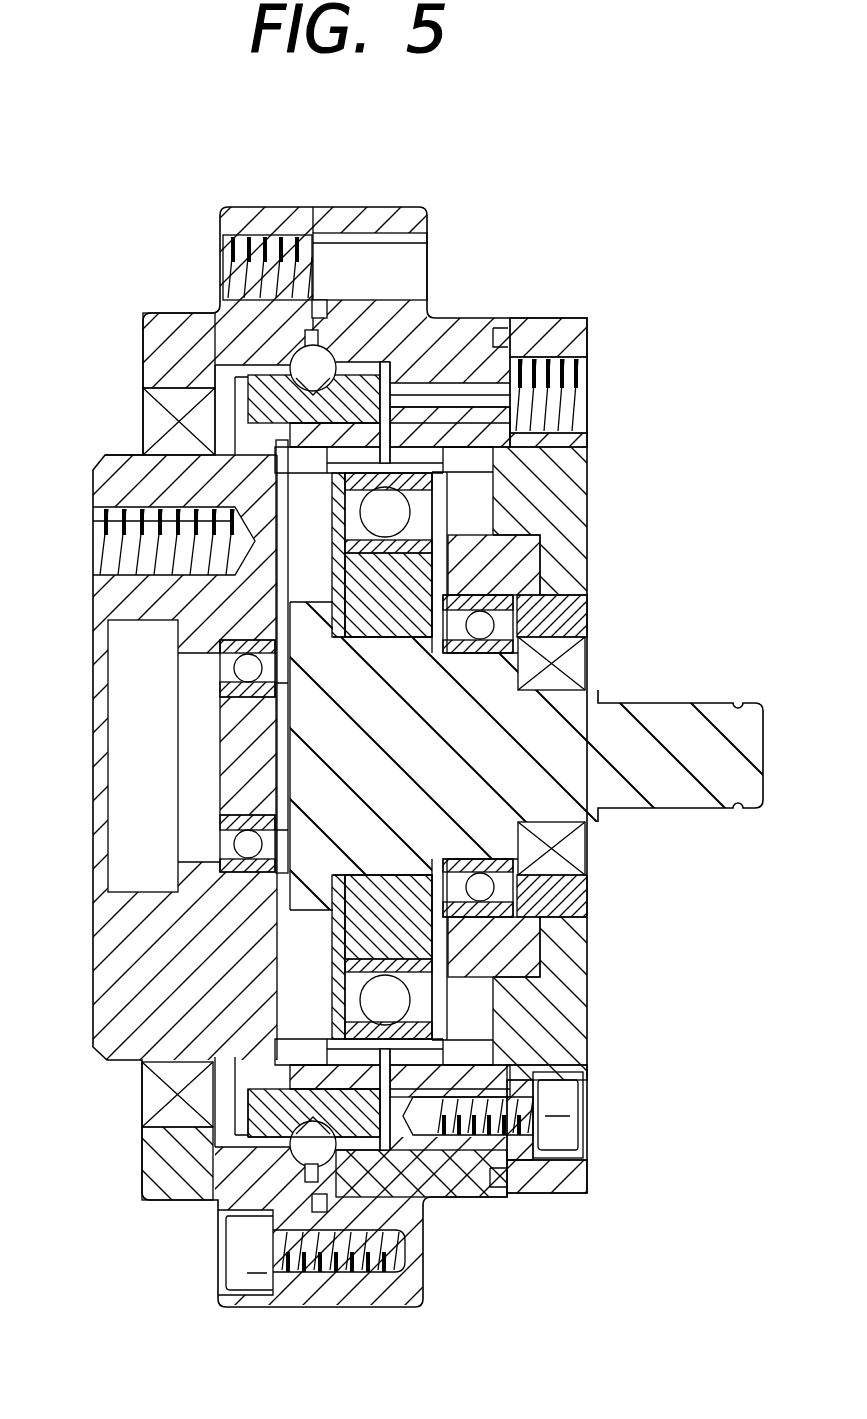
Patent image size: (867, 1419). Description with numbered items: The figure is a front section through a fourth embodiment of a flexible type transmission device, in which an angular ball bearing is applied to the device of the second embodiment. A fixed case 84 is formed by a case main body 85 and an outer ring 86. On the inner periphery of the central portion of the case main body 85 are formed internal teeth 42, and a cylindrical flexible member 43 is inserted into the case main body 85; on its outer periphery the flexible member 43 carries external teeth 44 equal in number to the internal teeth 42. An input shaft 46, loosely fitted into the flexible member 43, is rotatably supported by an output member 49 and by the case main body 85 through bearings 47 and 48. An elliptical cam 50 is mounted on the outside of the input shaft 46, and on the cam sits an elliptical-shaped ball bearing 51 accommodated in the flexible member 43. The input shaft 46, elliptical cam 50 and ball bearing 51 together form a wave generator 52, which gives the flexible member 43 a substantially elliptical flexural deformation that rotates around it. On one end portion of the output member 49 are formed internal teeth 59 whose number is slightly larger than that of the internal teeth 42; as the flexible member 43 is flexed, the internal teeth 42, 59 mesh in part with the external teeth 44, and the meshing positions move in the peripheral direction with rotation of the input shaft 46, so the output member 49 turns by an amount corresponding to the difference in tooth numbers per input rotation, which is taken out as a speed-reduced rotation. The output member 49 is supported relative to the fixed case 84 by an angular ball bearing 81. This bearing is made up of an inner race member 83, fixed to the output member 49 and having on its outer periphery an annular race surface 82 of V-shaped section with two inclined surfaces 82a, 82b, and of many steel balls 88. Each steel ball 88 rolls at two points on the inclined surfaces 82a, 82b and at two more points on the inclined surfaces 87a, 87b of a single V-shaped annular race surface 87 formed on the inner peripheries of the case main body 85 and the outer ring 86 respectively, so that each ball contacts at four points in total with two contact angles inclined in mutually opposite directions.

The internal teeth 42 is at (560, 492).
The flexible member 43 is at (560, 463).
The external teeth 44 is at (560, 407).
The input shaft 46 is at (672, 712).
The bearing 47 is at (246, 668).
The bearing 48 is at (538, 594).
The output member 49 is at (107, 950).
The elliptical cam 50 is at (384, 618).
The ball bearing 51 is at (393, 512).
The wave generator 52 is at (597, 668).
The internal teeth 59 is at (328, 475).
The angular ball bearing 81 is at (230, 1100).
The annular race surface 82 is at (300, 1150).
The inclined surface 82a is at (262, 398).
The inclined surface 82b is at (345, 362).
The inner race member 83 is at (245, 400).
The fixed case 84 is at (468, 311).
The case main body 85 is at (418, 313).
The outer ring 86 is at (172, 320).
The annular race surface 87 is at (298, 345).
The inclined surface 87a is at (322, 1155).
The inclined surface 87b is at (330, 1160).
The steel balls 88 is at (443, 1196).